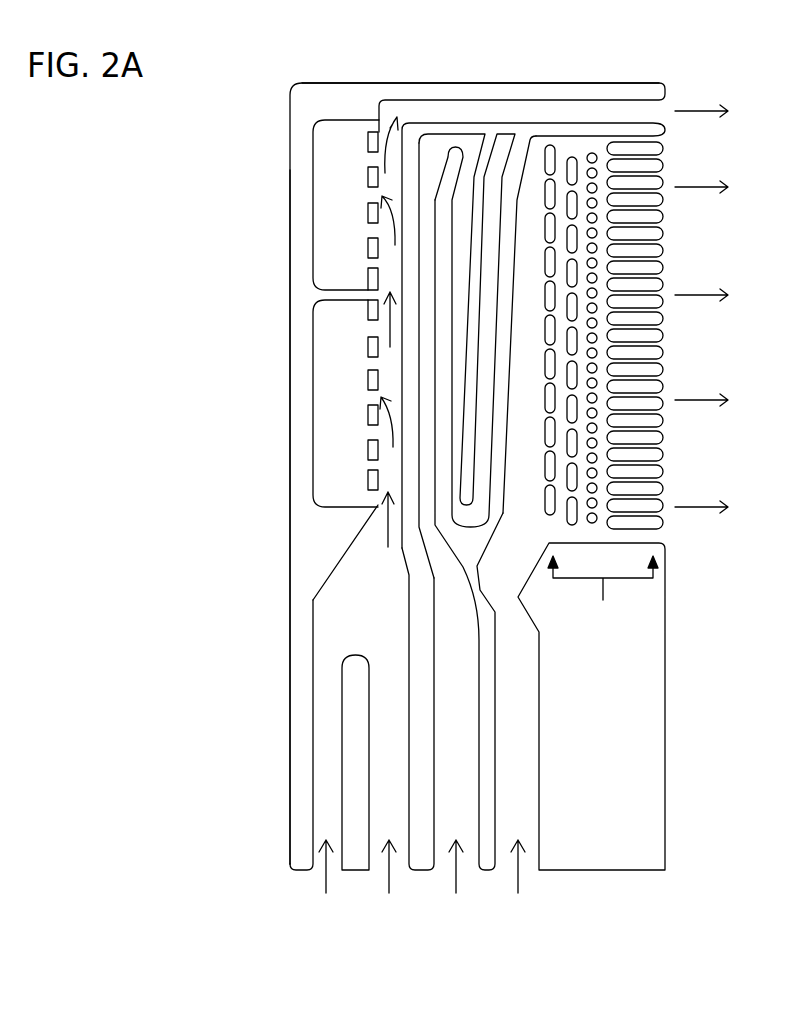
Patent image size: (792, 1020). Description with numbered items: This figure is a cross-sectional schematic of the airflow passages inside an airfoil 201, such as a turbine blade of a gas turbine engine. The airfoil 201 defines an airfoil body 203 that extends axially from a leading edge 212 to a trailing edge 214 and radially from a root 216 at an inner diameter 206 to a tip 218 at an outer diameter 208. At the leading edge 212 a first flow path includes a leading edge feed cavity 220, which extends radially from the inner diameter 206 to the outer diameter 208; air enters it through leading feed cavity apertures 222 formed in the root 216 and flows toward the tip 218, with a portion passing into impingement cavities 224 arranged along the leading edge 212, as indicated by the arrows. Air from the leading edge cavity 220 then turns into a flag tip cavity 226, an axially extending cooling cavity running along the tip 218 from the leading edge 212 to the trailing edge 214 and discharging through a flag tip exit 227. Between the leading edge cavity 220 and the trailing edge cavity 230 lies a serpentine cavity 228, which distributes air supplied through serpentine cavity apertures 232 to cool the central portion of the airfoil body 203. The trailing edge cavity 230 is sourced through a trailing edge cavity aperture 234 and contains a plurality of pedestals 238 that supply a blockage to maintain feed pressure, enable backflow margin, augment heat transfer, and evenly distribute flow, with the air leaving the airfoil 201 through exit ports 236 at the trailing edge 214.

The airfoil 201 is at (107, 227).
The airfoil body 203 is at (297, 443).
The inner diameter 206 is at (206, 863).
The outer diameter 208 is at (247, 93).
The leading edge 212 is at (287, 170).
The trailing edge 214 is at (668, 600).
The root 216 is at (302, 866).
The tip 218 is at (535, 83).
The leading edge feed cavity 220 is at (377, 619).
The leading feed cavity apertures 222 is at (333, 867).
The impingement cavities 224 is at (342, 221).
The flag tip cavity 226 is at (462, 108).
The flag tip exit 227 is at (657, 110).
The serpentine cavity 228 is at (475, 642).
The trailing edge cavity 230 is at (524, 580).
The serpentine cavity apertures 232 is at (465, 868).
The trailing edge cavity aperture 234 is at (532, 867).
The exit ports 236 is at (665, 145).
The pedestals 238 is at (603, 594).